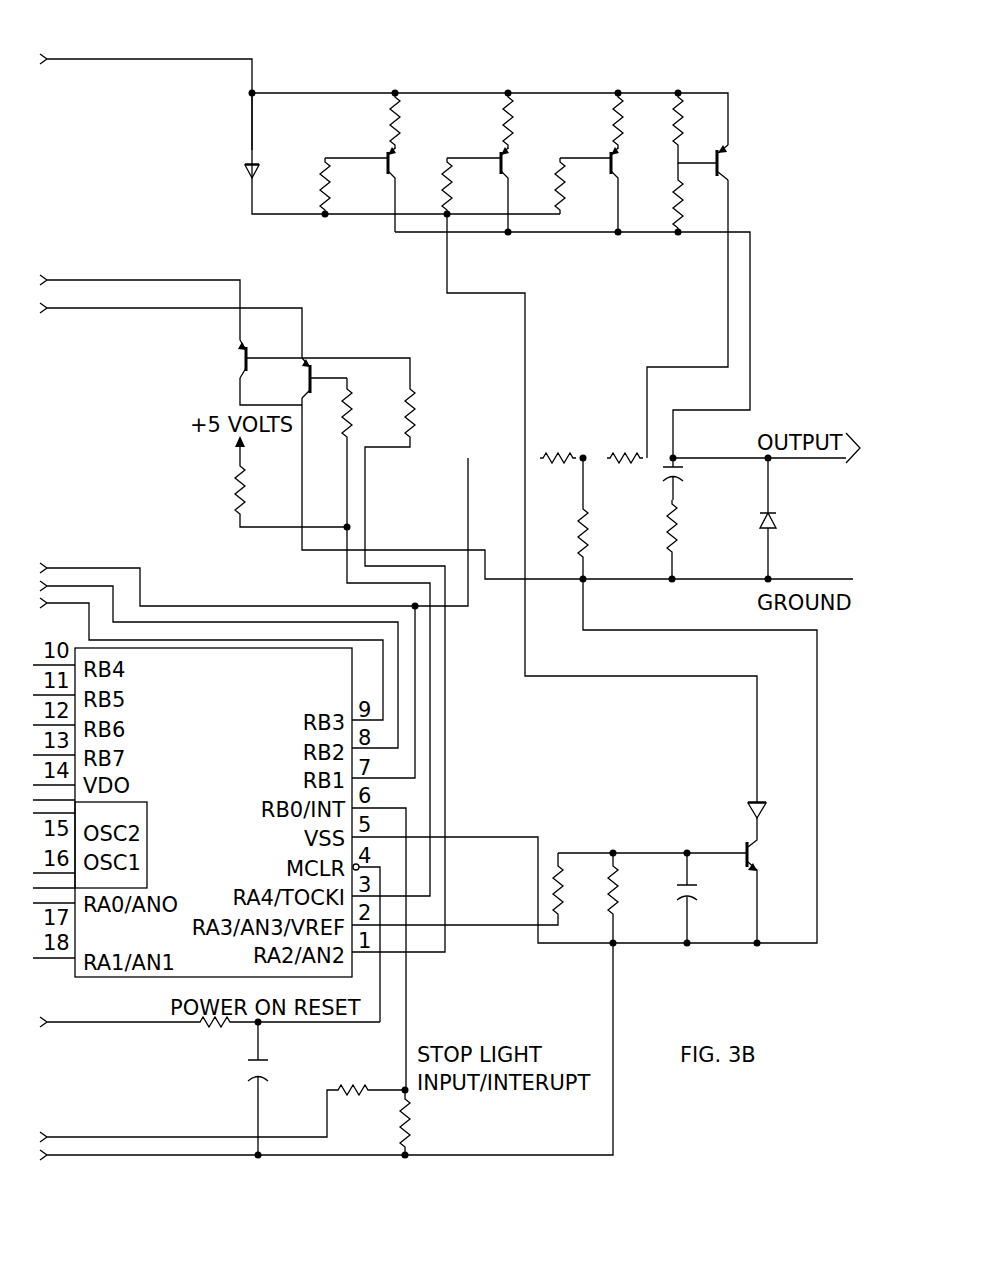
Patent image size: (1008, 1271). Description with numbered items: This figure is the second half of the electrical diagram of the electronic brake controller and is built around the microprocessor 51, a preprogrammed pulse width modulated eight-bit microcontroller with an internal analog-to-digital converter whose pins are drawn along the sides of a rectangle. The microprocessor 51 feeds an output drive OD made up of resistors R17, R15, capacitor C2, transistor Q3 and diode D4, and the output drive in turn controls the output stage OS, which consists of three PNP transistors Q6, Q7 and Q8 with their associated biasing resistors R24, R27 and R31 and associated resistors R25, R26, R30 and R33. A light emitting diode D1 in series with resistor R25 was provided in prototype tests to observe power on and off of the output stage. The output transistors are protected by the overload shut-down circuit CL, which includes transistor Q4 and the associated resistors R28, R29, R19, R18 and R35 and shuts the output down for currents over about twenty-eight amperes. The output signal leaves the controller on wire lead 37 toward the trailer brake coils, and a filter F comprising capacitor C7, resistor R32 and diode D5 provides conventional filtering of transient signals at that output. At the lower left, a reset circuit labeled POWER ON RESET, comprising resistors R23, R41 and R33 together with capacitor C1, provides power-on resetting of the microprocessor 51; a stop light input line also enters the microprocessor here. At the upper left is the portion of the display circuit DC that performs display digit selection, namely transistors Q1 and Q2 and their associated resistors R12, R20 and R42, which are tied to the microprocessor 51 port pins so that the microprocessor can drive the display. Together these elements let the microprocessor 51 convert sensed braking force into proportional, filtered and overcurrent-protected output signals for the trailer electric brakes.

The resistor R25 is at (276, 123).
The light emitting diode D1 is at (274, 185).
The biasing resistor R24 is at (354, 187).
The resistor R26 is at (418, 123).
The PNP transistor Q6 is at (413, 189).
The biasing resistor R27 is at (471, 187).
The resistor R30 is at (530, 123).
The PNP transistor Q7 is at (523, 189).
The biasing resistor R31 is at (583, 187).
The resistor R33 is at (533, 624).
The PNP transistor Q8 is at (633, 189).
The resistor R29 is at (699, 128).
The transistor Q4 is at (743, 162).
The resistor R28 is at (700, 199).
The output stage OS is at (489, 78).
The display circuit DC is at (289, 298).
The transistor Q2 is at (250, 347).
The transistor Q1 is at (324, 392).
The resistor R12 is at (372, 413).
The resistor R20 is at (436, 413).
The resistor R42 is at (262, 477).
The microprocessor 51 is at (217, 690).
The resistor R19 is at (561, 431).
The resistor R18 is at (621, 431).
The overload shut-down circuit CL is at (700, 262).
The filter F is at (742, 447).
The wire lead 37 is at (860, 445).
The capacitor C7 is at (710, 487).
The resistor R32 is at (699, 539).
The resistor R35 is at (606, 518).
The diode D5 is at (786, 518).
The output drive OD is at (650, 851).
The resistor R17 is at (578, 890).
The resistor R15 is at (641, 898).
The capacitor C2 is at (716, 898).
The transistor Q3 is at (775, 880).
The diode D4 is at (777, 811).
The resistor R23 is at (218, 1053).
The capacitor C1 is at (289, 1088).
The resistor R41 is at (364, 1119).